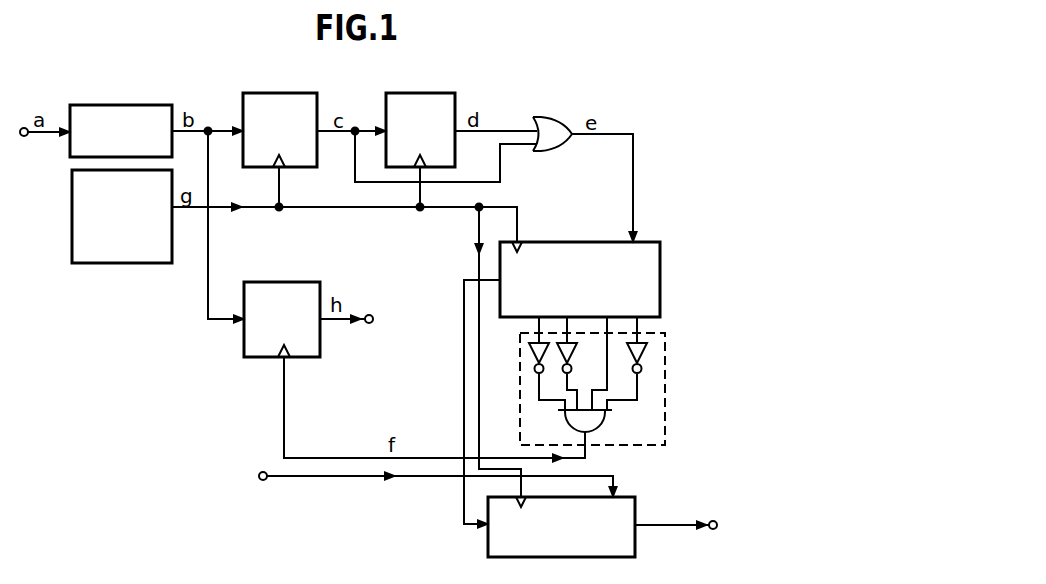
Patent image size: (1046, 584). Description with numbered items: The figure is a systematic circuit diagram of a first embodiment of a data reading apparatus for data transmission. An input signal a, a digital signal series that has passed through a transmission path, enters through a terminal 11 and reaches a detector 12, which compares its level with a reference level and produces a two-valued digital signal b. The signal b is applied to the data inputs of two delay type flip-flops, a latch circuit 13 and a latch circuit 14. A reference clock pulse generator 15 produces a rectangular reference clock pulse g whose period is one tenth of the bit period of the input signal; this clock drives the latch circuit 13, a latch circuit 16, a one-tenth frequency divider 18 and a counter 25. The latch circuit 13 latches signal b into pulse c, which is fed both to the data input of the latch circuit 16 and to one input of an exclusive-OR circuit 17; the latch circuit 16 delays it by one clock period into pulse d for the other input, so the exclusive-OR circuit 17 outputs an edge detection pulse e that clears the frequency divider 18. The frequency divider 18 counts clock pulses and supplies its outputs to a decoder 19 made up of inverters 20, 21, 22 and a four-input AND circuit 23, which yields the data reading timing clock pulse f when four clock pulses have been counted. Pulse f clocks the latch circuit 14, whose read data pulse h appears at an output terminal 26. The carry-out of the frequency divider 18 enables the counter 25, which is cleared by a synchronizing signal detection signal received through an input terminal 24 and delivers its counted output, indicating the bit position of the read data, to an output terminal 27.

The terminal 11 is at (24, 128).
The detector 12 is at (119, 105).
The latch circuit 13 is at (265, 93).
The latch circuit 14 is at (263, 282).
The reference clock pulse generator 15 is at (72, 217).
The latch circuit 16 is at (404, 93).
The exclusive-OR circuit 17 is at (553, 117).
The 1/10-frequency divider 18 is at (576, 242).
The decoder 19 is at (666, 377).
The inverter 20 is at (529, 353).
The inverter 21 is at (573, 354).
The inverter 22 is at (646, 352).
The 4-input AND circuit 23 is at (603, 424).
The input terminal 24 is at (260, 472).
The counter 25 is at (635, 504).
The output terminal 26 is at (369, 314).
The output terminal 27 is at (713, 520).